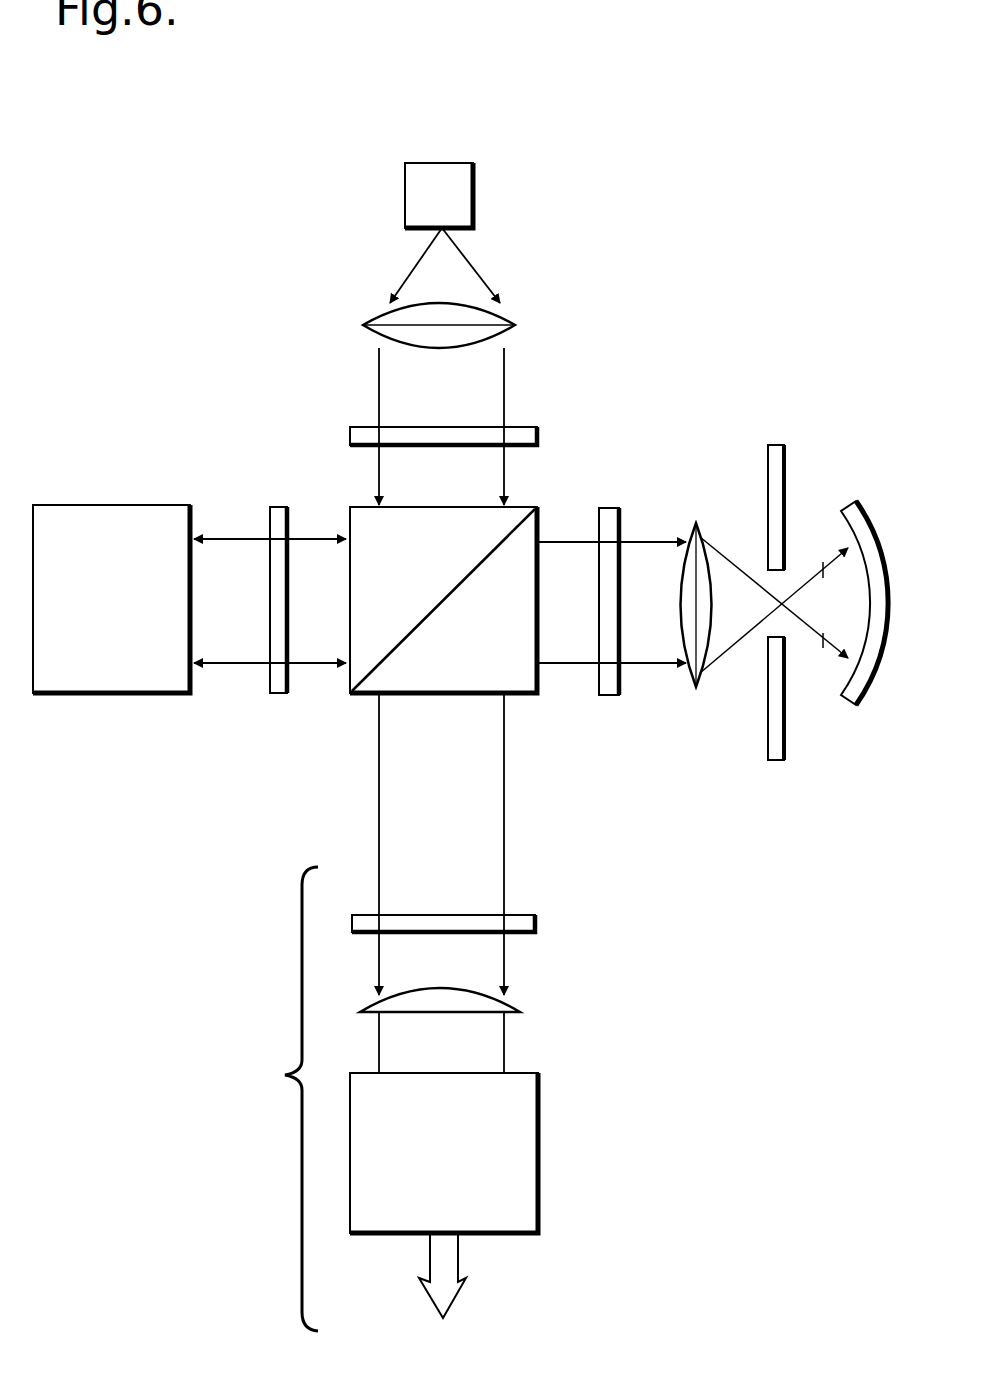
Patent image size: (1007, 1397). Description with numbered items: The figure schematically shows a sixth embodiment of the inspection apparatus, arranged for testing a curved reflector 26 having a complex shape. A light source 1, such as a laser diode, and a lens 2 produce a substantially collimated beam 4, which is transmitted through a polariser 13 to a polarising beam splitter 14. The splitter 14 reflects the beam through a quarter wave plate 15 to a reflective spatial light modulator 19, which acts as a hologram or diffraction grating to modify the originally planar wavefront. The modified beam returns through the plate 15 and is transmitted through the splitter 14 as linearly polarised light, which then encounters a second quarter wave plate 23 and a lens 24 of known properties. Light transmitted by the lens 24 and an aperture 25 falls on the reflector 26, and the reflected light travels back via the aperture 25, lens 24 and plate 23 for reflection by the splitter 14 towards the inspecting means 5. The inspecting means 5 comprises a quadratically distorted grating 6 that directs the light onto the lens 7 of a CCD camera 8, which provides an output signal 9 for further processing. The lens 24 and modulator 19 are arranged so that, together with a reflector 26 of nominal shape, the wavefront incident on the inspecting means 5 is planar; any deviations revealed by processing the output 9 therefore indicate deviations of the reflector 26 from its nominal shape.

The light source 1 is at (439, 195).
The lens 2 is at (518, 325).
The collimated beam 4 is at (441, 426).
The inspecting means 5 is at (278, 1099).
The quadratically distorted grating 6 is at (537, 925).
The lens 7 is at (520, 1012).
The CCD camera 8 is at (444, 1153).
The output signal 9 is at (448, 1268).
The polariser 13 is at (537, 436).
The polarising beam splitter 14 is at (360, 697).
The quarter wave plate 15 is at (278, 525).
The reflective spatial light modulator 19 is at (111, 599).
The second quarter wave plate 23 is at (612, 685).
The lens 24 is at (700, 690).
The aperture 25 is at (776, 460).
The curved reflector 26 is at (868, 520).